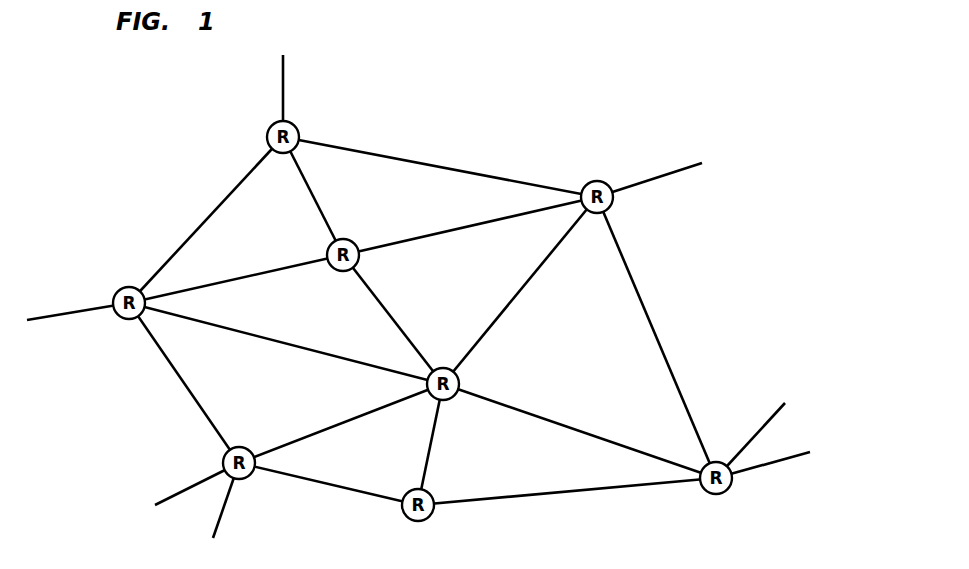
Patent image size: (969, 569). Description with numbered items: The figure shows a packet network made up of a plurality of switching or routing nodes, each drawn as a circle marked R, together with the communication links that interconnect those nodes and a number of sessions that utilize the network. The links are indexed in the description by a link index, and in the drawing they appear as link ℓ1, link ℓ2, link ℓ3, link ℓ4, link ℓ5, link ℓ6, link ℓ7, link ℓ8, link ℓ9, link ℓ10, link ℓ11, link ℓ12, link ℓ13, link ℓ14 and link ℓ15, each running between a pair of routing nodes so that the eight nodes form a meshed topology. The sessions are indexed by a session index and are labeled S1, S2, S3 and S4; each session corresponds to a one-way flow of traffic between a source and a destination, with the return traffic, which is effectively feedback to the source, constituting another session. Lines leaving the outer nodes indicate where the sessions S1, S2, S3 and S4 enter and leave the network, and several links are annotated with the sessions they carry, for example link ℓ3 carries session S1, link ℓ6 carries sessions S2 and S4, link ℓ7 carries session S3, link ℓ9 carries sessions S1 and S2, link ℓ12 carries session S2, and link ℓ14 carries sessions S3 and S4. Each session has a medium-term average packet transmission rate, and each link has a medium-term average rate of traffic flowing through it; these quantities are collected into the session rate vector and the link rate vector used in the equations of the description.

The communication link 1 is at (206, 220).
The communication link 2 is at (236, 272).
The communication link 3 is at (286, 343).
The communication link 4 is at (184, 383).
The communication link 5 is at (328, 490).
The communication link 6 is at (341, 423).
The communication link 7 is at (459, 444).
The communication link 8 is at (567, 501).
The communication link 9 is at (525, 290).
The communication link 10 is at (470, 226).
The communication link 11 is at (321, 196).
The communication link 12 is at (440, 165).
The communication link 13 is at (393, 319).
The communication link 14 is at (579, 430).
The communication link 15 is at (656, 337).
The network session S1 is at (364, 229).
The network session S2 is at (265, 296).
The network session S3 is at (750, 434).
The network session S4 is at (478, 478).